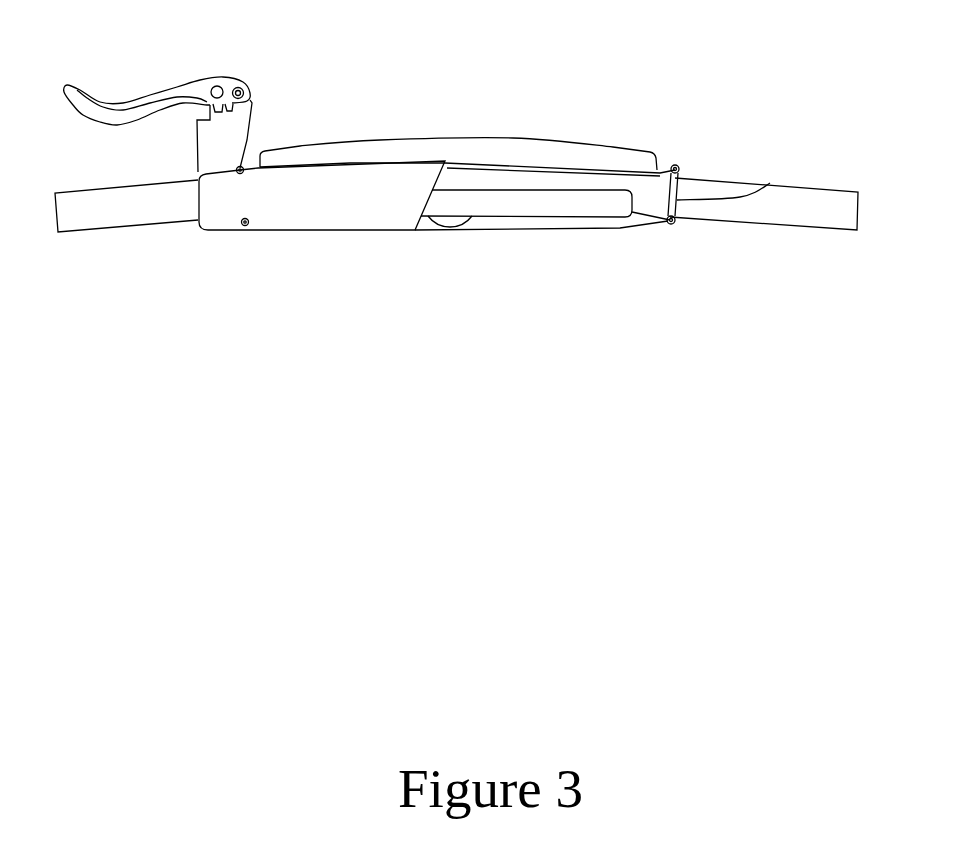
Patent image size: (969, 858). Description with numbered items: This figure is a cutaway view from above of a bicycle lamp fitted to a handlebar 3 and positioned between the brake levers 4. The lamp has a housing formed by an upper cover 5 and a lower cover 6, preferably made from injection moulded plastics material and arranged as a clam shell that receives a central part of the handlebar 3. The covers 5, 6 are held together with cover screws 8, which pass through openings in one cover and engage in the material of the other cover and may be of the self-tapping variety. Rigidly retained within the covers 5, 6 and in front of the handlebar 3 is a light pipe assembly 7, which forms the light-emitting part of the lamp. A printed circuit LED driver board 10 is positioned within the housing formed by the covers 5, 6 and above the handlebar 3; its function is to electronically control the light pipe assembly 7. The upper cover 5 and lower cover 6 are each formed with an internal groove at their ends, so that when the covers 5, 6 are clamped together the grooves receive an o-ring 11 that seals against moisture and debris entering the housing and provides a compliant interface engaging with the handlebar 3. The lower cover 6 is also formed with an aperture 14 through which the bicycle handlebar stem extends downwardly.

The handlebar 3 is at (832, 208).
The brake levers 4 is at (165, 88).
The upper cover 5 is at (352, 200).
The lower cover 6 is at (605, 229).
The light pipe assembly 7 is at (420, 152).
The cover screws 8 is at (676, 168).
The printed circuit LED driver board 10 is at (552, 202).
The o-ring 11 is at (770, 183).
The aperture 14 is at (468, 219).